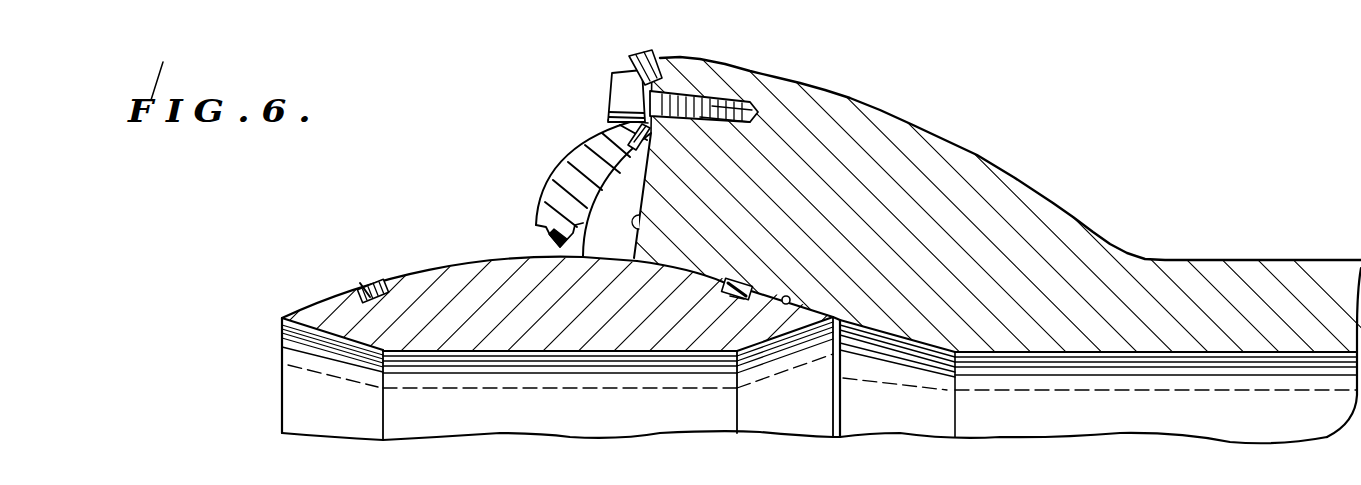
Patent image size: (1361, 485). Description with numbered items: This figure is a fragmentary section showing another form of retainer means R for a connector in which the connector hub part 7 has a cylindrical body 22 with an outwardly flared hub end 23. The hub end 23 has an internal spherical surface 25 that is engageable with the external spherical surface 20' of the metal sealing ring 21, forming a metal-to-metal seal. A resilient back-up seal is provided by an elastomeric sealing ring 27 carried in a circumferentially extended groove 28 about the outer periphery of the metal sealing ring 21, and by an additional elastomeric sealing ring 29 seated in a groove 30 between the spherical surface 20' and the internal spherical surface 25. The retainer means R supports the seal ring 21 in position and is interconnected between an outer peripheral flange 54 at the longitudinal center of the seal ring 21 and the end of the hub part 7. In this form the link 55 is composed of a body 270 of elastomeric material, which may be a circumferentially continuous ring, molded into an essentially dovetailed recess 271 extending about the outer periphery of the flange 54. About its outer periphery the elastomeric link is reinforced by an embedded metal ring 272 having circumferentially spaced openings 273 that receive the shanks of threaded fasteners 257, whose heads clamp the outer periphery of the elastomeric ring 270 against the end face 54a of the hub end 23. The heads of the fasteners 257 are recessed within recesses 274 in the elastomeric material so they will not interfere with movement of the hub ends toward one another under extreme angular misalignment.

The connector hub part 7 is at (1318, 260).
The external spherical surface 20' is at (629, 290).
The metal sealing ring 21 is at (557, 348).
The cylindrical body 22 is at (1242, 280).
The hub end 23 is at (897, 138).
The internal spherical surface 25 is at (790, 296).
The elastomeric sealing ring 27 is at (378, 283).
The groove 28 is at (362, 285).
The additional elastomeric sealing ring 29 is at (749, 283).
The groove 30 is at (733, 301).
The outer peripheral flange 54 is at (583, 243).
The end face 54a is at (642, 225).
The resilient link 55 is at (573, 155).
The retainer means R is at (545, 182).
The threaded fasteners 257 is at (686, 118).
The body of elastomeric material 270 is at (556, 205).
The dovetailed recess 271 is at (549, 236).
The embedded metal ring 272 is at (653, 56).
The openings 273 is at (686, 92).
The recesses 274 is at (611, 78).